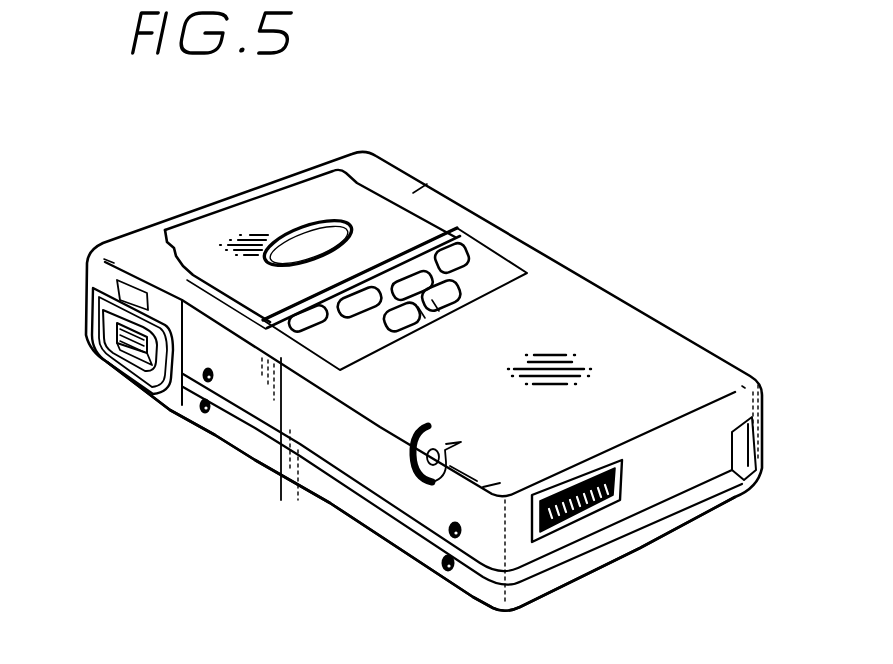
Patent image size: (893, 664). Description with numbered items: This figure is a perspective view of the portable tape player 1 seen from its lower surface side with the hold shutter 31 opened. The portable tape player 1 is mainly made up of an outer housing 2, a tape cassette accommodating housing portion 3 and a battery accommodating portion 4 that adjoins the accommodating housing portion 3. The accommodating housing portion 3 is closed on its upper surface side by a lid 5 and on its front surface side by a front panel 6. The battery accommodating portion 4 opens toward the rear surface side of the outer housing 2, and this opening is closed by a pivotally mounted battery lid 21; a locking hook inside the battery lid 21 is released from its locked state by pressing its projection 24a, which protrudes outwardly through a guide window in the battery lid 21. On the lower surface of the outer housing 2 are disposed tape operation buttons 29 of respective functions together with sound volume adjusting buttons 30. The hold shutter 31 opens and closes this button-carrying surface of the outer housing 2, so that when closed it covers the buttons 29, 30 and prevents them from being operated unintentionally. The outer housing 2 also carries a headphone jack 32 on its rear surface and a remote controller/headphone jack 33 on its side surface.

The portable tape player 1 is at (606, 205).
The outer housing 2 is at (620, 327).
The tape cassette accommodating housing portion 3 is at (683, 512).
The battery accommodating portion 4 is at (118, 226).
The lid 5 is at (463, 583).
The front panel 6 is at (747, 442).
The battery lid 21 is at (132, 370).
The projection 24a is at (106, 361).
The tape operation buttons 29 is at (363, 300).
The sound volume adjusting buttons 30 is at (457, 297).
The hold shutter 31 is at (359, 197).
The headphone jack 32 is at (418, 470).
The remote controller/headphone jack 33 is at (580, 503).